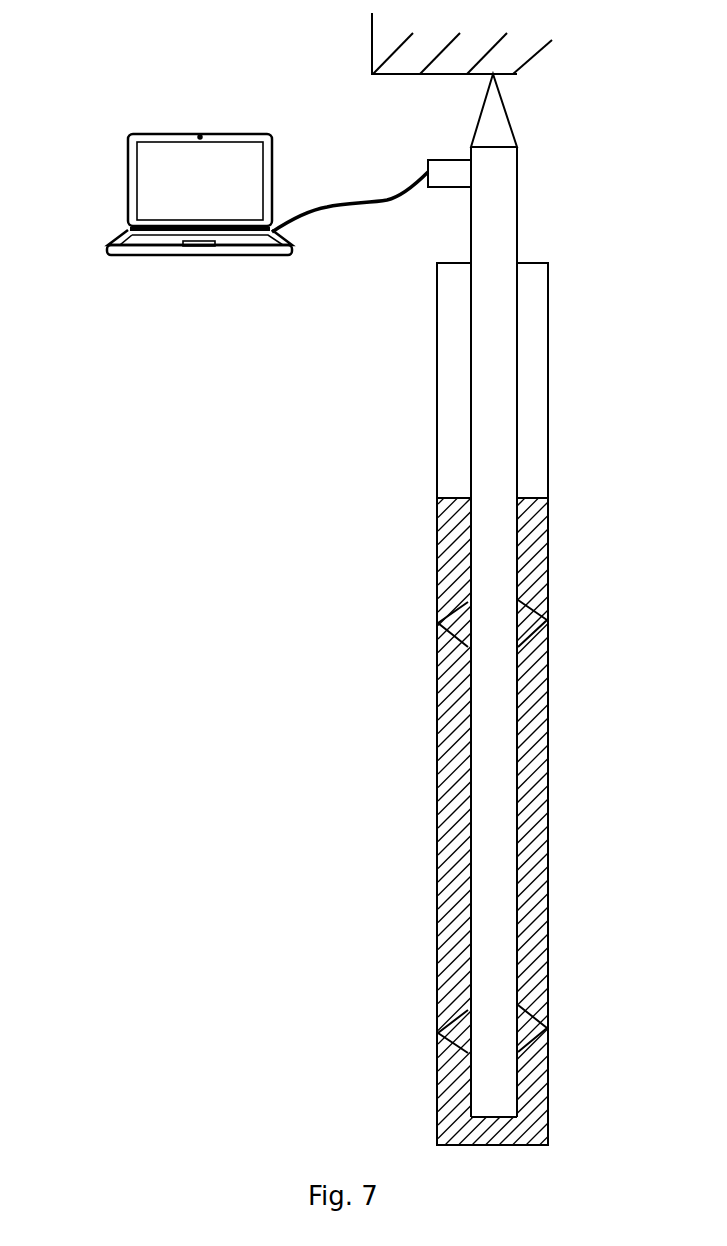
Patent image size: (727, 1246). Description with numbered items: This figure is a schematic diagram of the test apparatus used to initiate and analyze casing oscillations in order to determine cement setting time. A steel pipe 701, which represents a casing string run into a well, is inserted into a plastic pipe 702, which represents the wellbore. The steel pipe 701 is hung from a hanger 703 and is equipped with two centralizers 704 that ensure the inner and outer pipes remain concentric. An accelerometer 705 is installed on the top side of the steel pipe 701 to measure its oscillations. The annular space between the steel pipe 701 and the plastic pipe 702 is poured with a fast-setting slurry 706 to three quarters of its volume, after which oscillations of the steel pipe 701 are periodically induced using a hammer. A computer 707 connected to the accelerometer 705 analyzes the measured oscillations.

The steel pipe 701 is at (505, 227).
The plastic pipe 702 is at (538, 337).
The hanger 703 is at (505, 110).
The centralizers 704 is at (547, 602).
The accelerometer 705 is at (428, 165).
The fast-setting slurry 706 is at (535, 822).
The computer 707 is at (127, 177).